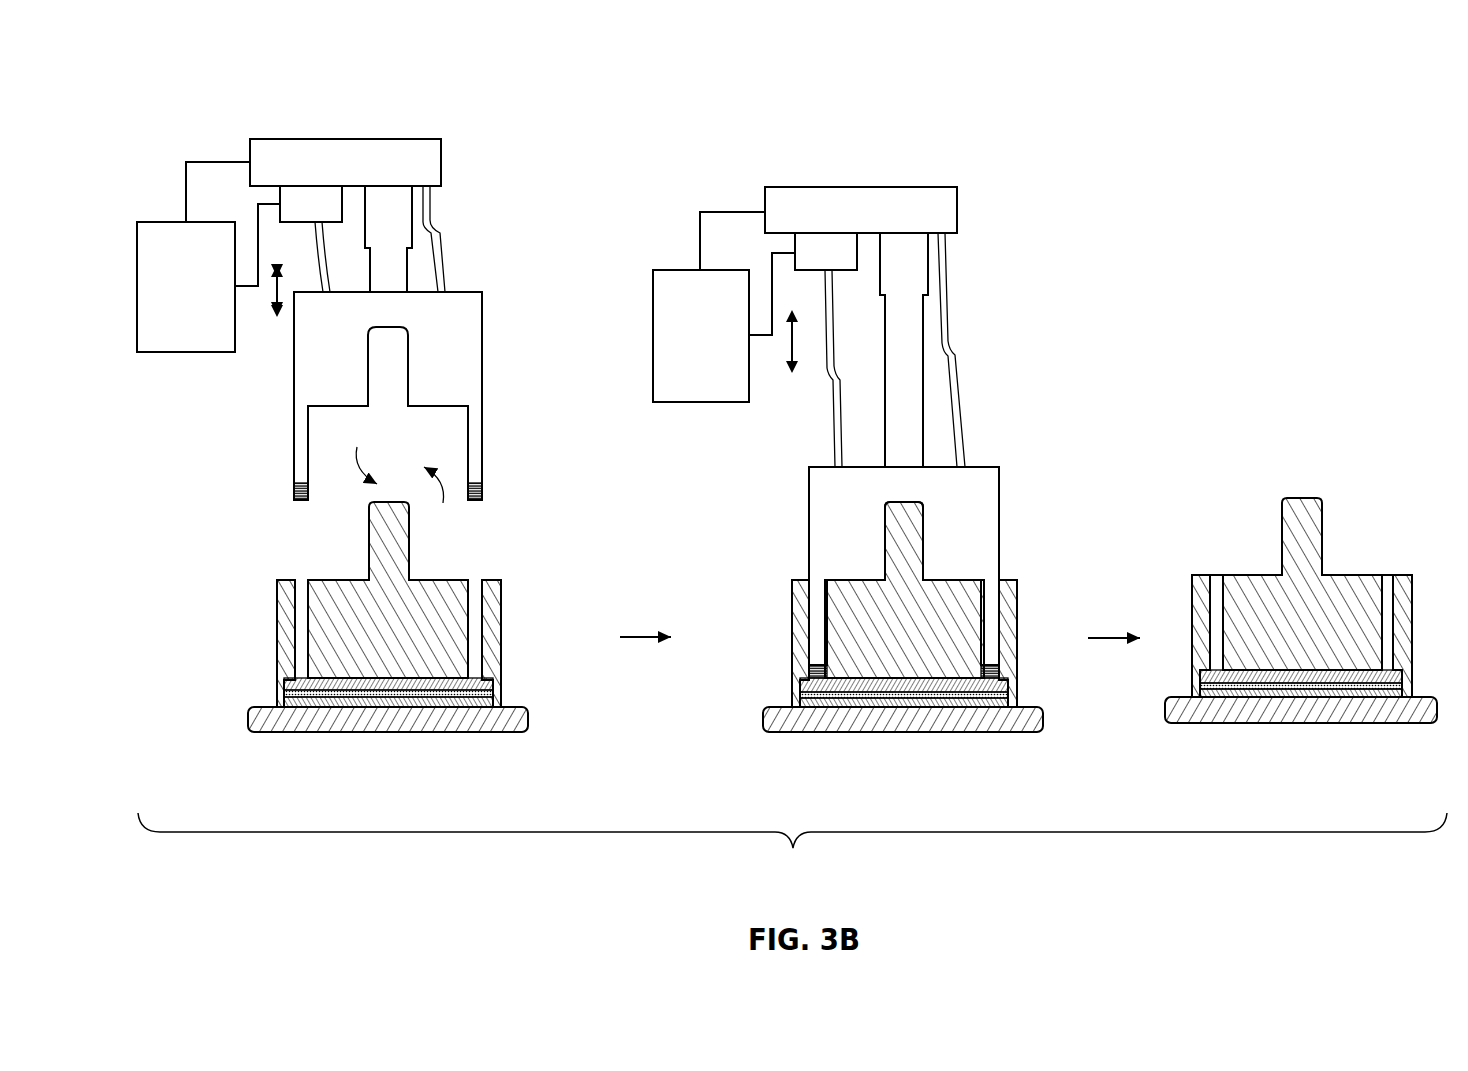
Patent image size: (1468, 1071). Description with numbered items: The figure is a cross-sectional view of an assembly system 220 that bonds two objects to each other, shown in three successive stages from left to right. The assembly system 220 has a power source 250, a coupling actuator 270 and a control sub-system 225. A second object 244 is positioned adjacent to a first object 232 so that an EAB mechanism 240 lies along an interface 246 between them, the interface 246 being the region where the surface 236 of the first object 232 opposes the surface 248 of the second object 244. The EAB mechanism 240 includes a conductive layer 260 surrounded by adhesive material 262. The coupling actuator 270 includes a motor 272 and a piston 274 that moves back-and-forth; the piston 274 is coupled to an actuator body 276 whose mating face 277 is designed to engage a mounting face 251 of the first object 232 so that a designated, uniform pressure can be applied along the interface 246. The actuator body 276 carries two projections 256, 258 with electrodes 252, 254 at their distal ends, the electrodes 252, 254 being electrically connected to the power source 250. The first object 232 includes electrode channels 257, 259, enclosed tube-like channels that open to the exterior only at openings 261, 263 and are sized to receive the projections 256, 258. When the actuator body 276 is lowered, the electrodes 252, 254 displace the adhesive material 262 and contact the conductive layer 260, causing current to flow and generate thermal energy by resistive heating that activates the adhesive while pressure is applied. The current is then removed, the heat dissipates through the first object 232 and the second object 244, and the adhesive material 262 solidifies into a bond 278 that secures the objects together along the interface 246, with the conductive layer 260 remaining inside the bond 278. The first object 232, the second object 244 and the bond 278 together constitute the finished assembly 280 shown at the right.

The assembly system 220 is at (508, 72).
The control sub-system 225 is at (170, 218).
The first object 232 is at (348, 571).
The surface 236 is at (457, 689).
The EAB mechanism 240 is at (413, 704).
The second object 244 is at (334, 736).
The interface 246 is at (498, 681).
The surface 248 is at (316, 702).
The power source 250 is at (304, 183).
The mounting face 251 is at (365, 450).
The electrode 252 is at (299, 482).
The electrode 254 is at (477, 482).
The projection 256 is at (294, 445).
The electrode channel 257 is at (298, 623).
The projection 258 is at (478, 424).
The electrode channel 259 is at (480, 623).
The conductive layer 260 is at (1365, 688).
The opening 261 is at (300, 575).
The adhesive material 262 is at (383, 701).
The opening 263 is at (476, 575).
The coupling actuator 270 is at (394, 136).
The motor 272 is at (445, 162).
The piston 274 is at (415, 214).
The actuator body 276 is at (486, 355).
The mating face 277 is at (448, 502).
The bond 278 is at (1263, 693).
The assembly 280 is at (1255, 469).